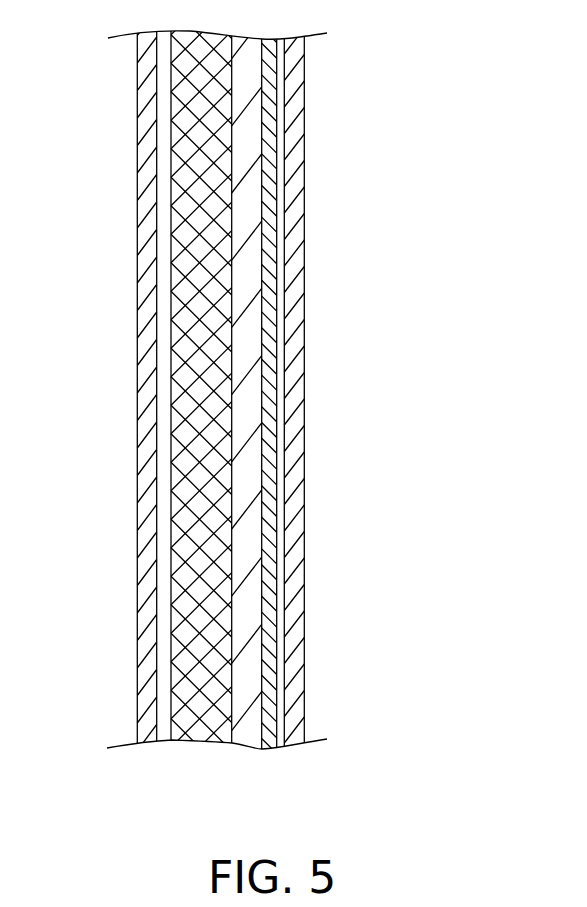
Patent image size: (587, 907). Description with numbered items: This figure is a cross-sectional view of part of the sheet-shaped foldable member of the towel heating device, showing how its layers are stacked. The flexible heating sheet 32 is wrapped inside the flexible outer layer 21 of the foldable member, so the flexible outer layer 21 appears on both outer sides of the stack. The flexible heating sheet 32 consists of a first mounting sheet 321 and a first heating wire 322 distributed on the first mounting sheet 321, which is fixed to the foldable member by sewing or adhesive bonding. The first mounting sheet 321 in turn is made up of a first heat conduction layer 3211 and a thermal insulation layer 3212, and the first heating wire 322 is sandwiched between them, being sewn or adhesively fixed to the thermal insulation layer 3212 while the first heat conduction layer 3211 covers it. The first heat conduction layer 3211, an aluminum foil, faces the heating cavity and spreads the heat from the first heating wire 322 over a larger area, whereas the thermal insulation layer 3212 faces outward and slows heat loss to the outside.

The flexible outer layer 21 is at (148, 150).
The flexible heating sheet 32 is at (356, 404).
The first mounting sheet 321 is at (328, 404).
The first heat conduction layer 3211 is at (263, 288).
The thermal insulation layer 3212 is at (195, 380).
The first heating wire 322 is at (247, 473).